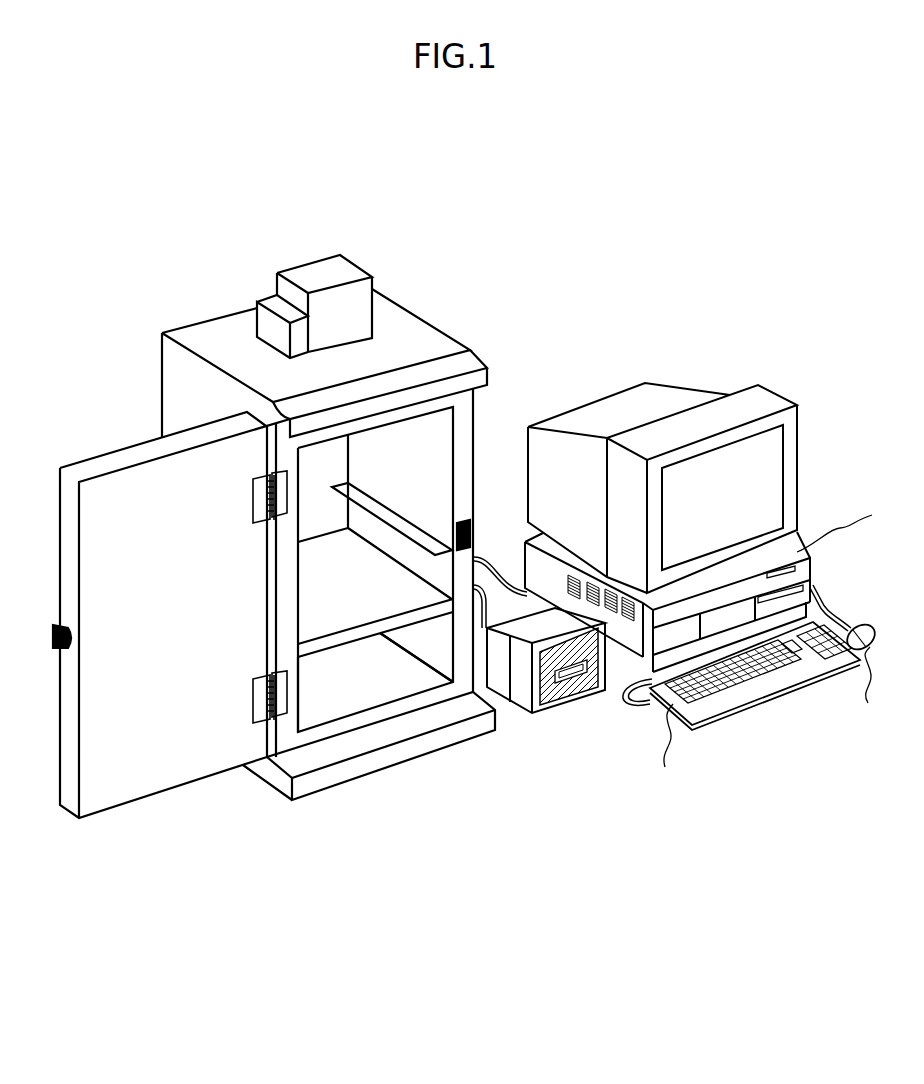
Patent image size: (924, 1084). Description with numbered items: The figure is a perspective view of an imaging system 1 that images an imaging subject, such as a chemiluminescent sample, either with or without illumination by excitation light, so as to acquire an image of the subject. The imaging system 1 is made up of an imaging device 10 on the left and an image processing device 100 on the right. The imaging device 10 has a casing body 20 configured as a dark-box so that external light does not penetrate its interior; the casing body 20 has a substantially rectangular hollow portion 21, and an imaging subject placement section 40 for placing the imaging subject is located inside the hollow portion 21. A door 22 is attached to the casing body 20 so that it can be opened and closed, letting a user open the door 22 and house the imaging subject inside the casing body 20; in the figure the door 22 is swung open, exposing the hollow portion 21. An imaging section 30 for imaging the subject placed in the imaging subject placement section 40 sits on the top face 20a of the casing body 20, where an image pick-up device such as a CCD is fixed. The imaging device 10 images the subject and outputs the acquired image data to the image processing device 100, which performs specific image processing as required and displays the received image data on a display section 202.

The imaging system 1 is at (597, 152).
The imaging device 10 is at (310, 230).
The casing body 20 is at (198, 320).
The top face 20a is at (428, 337).
The hollow portion 21 is at (427, 431).
The door 22 is at (222, 760).
The imaging section 30 is at (386, 273).
The imaging subject placement section 40 is at (399, 620).
The image processing device 100 is at (742, 310).
The display section 202 is at (788, 440).